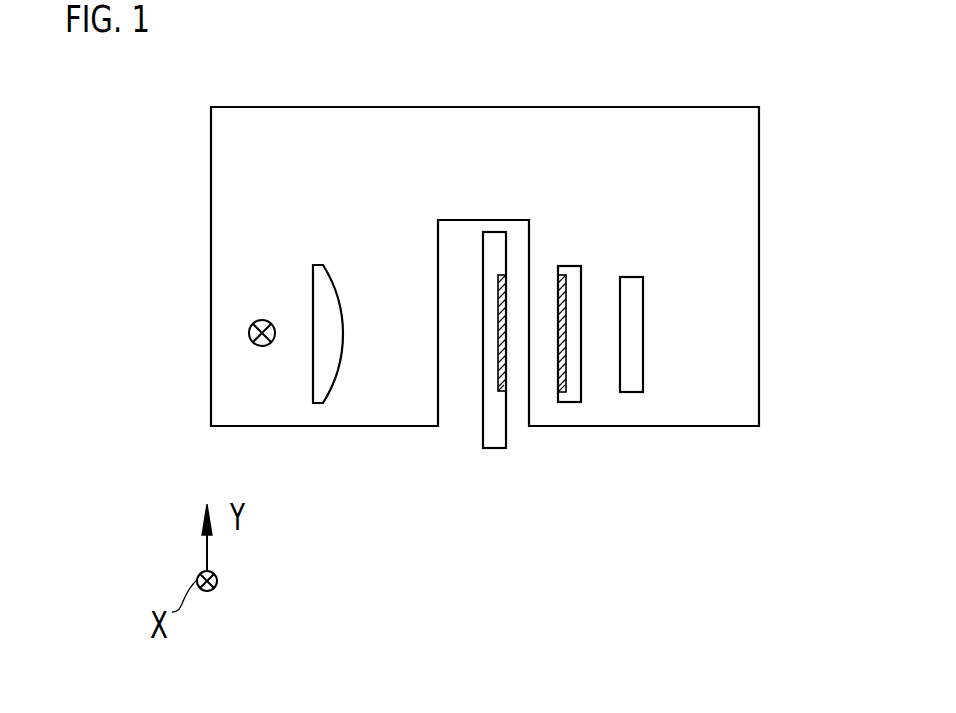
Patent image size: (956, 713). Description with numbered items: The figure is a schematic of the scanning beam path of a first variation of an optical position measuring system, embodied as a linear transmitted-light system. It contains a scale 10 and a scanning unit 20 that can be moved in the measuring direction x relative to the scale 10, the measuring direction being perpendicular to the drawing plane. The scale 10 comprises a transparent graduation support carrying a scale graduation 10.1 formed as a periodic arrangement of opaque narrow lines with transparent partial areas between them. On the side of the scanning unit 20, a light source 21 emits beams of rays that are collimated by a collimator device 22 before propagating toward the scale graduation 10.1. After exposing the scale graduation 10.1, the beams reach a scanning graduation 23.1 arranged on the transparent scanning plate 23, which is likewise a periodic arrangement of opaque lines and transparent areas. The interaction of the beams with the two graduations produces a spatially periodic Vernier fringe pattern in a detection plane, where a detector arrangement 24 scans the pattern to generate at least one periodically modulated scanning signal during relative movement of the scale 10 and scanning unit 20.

The scale 10 is at (492, 428).
The scale graduation 10.1 is at (505, 383).
The scanning unit 20 is at (725, 395).
The light source 21 is at (251, 340).
The lens 22 is at (322, 297).
The scanning plate 23 is at (572, 277).
The scanning graduation 23.1 is at (559, 290).
The detector arrangement 24 is at (637, 338).